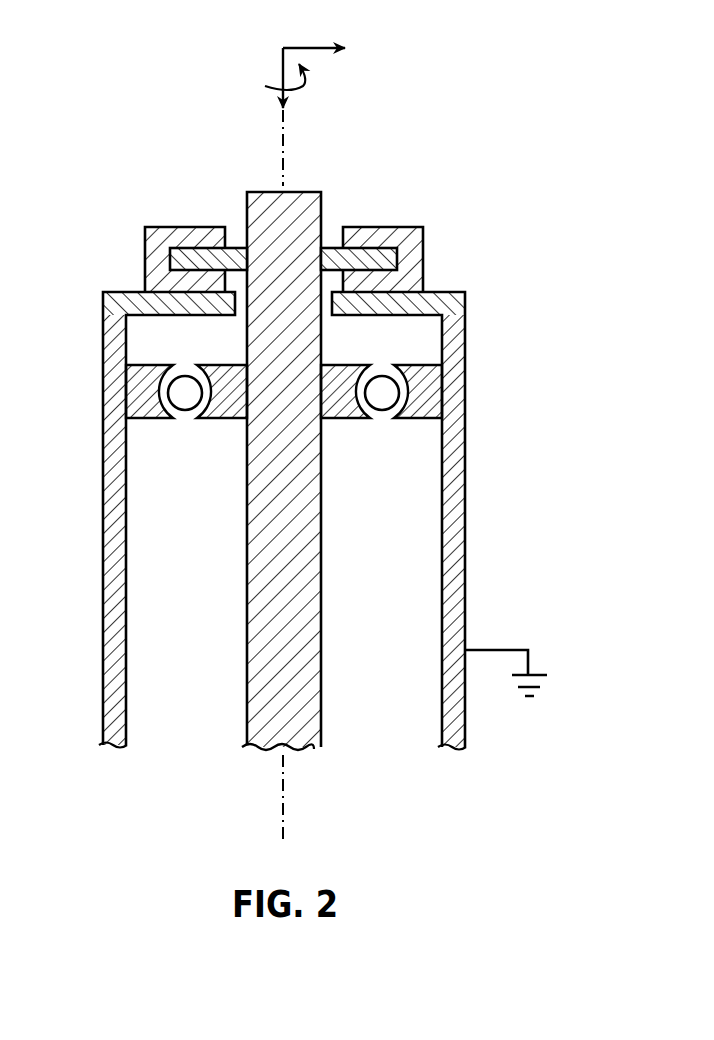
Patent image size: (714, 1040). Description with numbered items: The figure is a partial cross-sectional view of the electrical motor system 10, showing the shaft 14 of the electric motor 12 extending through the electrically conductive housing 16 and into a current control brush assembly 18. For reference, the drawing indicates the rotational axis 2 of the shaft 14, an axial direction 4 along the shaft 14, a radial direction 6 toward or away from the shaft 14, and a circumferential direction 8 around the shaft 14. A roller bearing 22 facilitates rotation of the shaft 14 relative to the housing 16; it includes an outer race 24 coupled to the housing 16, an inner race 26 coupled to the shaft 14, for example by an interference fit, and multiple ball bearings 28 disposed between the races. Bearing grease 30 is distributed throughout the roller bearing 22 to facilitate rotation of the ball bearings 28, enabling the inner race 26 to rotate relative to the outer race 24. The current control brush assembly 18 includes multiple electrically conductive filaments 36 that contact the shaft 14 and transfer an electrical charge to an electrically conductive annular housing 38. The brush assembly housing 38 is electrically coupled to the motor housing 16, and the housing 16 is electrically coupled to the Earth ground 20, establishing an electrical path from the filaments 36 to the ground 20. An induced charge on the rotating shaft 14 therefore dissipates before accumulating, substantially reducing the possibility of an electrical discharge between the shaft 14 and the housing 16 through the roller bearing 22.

The rotational axis 2 is at (285, 773).
The axial direction 4 is at (283, 68).
The radial direction 6 is at (310, 48).
The circumferential direction 8 is at (302, 86).
The electrical motor system 10 is at (549, 215).
The electric motor 12 is at (497, 485).
The shaft 14 is at (247, 612).
The housing 16 is at (103, 515).
The current control brush assembly 18 is at (375, 212).
The Earth ground 20 is at (536, 664).
The roller bearing 22 is at (152, 342).
The outer race 24 is at (133, 418).
The inner race 26 is at (237, 418).
The ball bearings 28 is at (185, 382).
The bearing grease 30 is at (168, 417).
The electrically conductive filaments 36 is at (242, 248).
The electrically conductive annular housing 38 is at (172, 233).